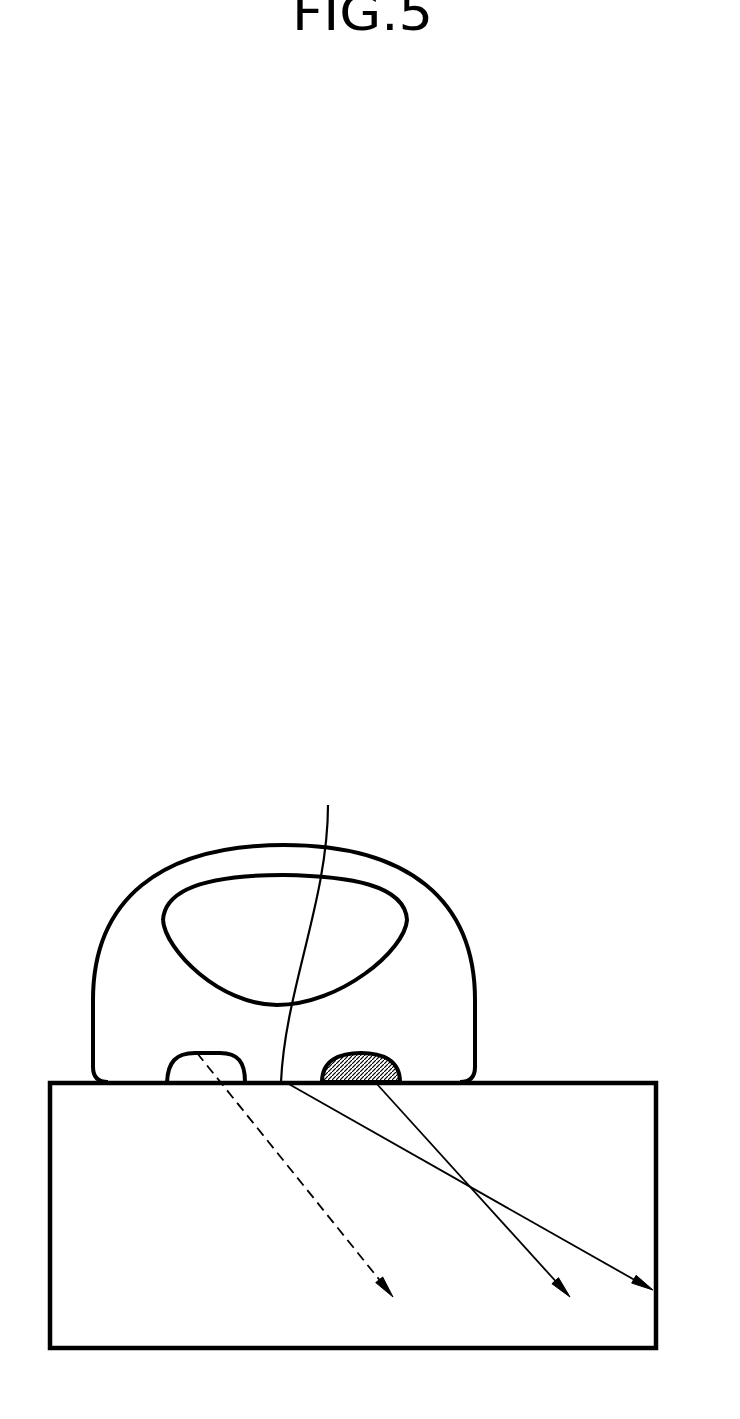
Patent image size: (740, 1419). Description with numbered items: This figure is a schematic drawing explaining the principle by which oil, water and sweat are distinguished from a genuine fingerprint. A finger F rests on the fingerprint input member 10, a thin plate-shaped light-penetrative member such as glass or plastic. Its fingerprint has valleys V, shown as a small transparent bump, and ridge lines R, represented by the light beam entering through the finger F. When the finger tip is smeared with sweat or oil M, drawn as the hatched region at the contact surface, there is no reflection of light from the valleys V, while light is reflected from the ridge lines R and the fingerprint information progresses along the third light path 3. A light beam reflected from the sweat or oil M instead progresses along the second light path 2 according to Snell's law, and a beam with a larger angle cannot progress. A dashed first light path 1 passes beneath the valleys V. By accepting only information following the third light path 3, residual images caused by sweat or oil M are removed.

The fingerprint input member 10 is at (353, 1215).
The finger F is at (452, 932).
The ridge lines R is at (311, 921).
The valleys V is at (181, 1052).
The sweat or oil M is at (372, 1052).
The first light path 1 is at (295, 1181).
The second light path 2 is at (493, 1211).
The third light path 3 is at (497, 1206).